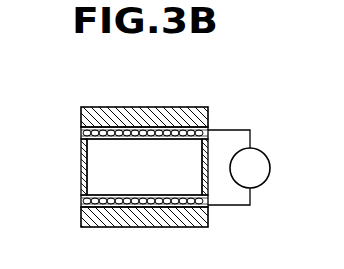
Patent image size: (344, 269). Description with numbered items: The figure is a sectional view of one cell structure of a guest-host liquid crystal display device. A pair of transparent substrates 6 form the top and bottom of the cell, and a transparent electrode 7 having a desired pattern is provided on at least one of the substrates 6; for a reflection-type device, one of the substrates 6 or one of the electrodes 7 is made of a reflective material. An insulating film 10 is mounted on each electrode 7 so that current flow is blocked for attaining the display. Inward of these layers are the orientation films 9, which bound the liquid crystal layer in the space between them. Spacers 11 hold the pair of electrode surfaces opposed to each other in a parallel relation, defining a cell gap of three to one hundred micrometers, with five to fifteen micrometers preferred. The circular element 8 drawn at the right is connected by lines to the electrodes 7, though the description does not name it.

The transparent substrate 6 is at (178, 116).
The transparent electrode 7 is at (82, 130).
The voltage source 8 is at (269, 166).
The orientation film 9 is at (78, 150).
The insulating film 10 is at (81, 136).
The spacer 11 is at (209, 150).